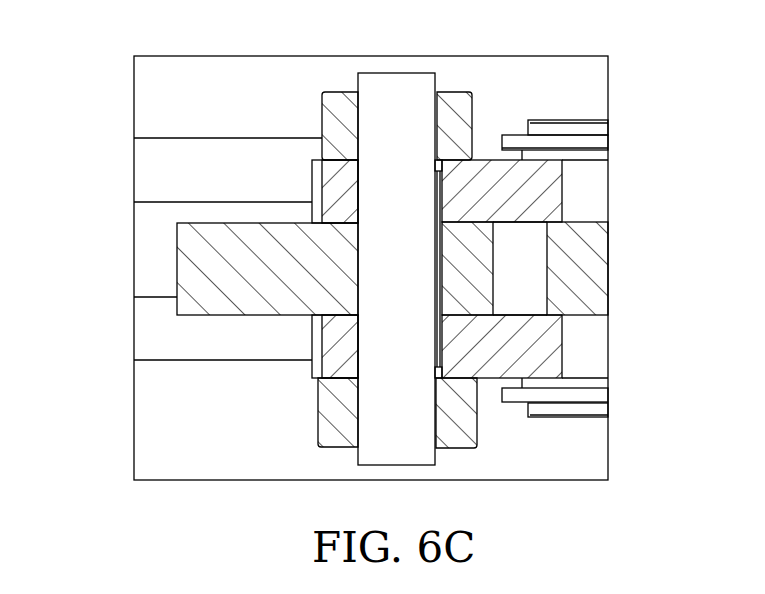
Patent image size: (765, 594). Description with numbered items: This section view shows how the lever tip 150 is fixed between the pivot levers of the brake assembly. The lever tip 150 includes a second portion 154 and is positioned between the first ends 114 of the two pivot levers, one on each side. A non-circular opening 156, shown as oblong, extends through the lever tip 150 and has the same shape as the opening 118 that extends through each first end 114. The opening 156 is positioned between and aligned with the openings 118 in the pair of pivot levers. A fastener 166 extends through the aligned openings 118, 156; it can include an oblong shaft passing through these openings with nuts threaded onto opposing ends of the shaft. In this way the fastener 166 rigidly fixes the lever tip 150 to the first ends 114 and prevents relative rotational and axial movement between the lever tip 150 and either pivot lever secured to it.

The first end 114 is at (297, 180).
The opening 118 is at (440, 156).
The lever tip 150 is at (499, 257).
The second portion 154 is at (177, 260).
The non-circular opening 156 is at (353, 270).
The fastener 166 is at (410, 166).